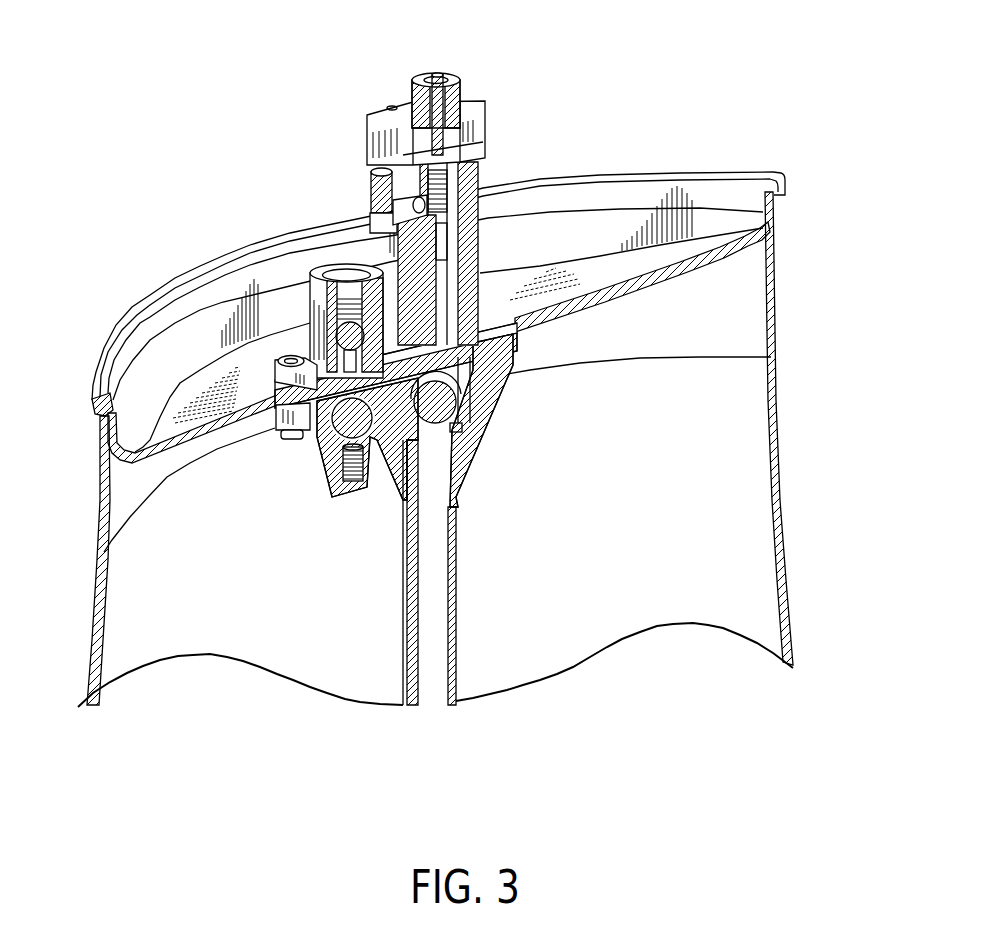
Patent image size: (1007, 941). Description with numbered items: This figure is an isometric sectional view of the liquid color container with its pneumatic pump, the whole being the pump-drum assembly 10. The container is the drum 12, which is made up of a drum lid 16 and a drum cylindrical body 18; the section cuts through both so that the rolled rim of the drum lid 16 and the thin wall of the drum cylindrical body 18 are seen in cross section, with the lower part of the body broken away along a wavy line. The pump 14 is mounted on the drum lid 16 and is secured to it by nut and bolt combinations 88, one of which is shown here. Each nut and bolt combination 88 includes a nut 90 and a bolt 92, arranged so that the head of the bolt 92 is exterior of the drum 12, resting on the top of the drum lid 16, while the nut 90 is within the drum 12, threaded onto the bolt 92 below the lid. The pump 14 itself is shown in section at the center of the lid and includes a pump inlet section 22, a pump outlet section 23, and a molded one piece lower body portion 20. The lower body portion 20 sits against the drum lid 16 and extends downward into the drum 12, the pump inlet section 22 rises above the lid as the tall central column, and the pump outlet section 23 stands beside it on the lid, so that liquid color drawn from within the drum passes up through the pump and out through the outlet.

The pump-drum assembly 10 is at (697, 78).
The drum 12 is at (778, 381).
The pump 14 is at (484, 168).
The drum lid 16 is at (698, 258).
The drum cylindrical body 18 is at (781, 471).
The lower body portion 20 is at (478, 439).
The pump inlet section 22 is at (482, 250).
The pump outlet section 23 is at (340, 272).
The nut and bolt combination 88 is at (292, 350).
The nut 90 is at (280, 435).
The bolt 92 is at (286, 354).